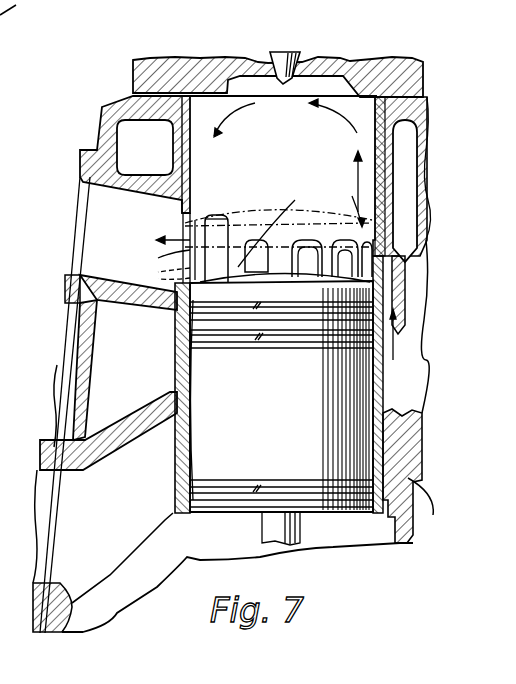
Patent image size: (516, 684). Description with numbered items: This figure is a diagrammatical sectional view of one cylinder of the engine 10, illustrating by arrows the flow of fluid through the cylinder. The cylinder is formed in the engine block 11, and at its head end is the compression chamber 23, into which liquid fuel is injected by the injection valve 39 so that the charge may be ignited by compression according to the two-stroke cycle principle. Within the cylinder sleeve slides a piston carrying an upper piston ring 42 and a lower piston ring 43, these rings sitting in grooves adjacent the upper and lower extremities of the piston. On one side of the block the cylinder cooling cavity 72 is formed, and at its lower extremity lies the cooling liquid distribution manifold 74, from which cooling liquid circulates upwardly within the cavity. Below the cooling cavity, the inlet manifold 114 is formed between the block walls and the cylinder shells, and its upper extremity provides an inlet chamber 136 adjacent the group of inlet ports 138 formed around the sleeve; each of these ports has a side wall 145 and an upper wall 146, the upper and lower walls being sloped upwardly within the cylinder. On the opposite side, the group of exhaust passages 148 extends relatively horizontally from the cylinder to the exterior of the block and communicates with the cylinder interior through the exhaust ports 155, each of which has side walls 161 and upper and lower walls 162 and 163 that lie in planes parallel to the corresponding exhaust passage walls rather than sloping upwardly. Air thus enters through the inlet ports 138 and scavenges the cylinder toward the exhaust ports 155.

The engine 10 is at (391, 57).
The engine block 11 is at (219, 271).
The compression chamber 23 is at (327, 87).
The injection valve 39 is at (283, 52).
The cylinder cooling cavity 72 is at (127, 130).
The group of exhaust passages 148 is at (100, 251).
The cooling liquid distribution manifold 74 is at (112, 340).
The inlet manifold 114 is at (80, 512).
The piston ring 42 is at (238, 240).
The inlet chamber 136 is at (392, 375).
The side wall of inlet port 145 is at (300, 284).
The piston ring 43 is at (250, 483).
The upper wall of exhaust port 162 is at (217, 213).
The exhaust port 155 is at (228, 215).
The upper wall of inlet port 146 is at (301, 240).
The group of inlet ports 138 is at (337, 232).
The side wall of exhaust port 161 is at (190, 246).
The lower wall of exhaust port 163 is at (172, 275).